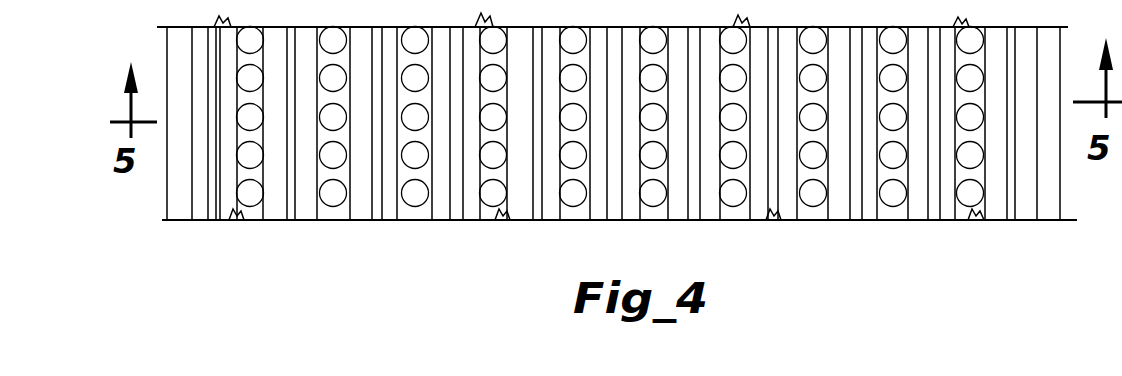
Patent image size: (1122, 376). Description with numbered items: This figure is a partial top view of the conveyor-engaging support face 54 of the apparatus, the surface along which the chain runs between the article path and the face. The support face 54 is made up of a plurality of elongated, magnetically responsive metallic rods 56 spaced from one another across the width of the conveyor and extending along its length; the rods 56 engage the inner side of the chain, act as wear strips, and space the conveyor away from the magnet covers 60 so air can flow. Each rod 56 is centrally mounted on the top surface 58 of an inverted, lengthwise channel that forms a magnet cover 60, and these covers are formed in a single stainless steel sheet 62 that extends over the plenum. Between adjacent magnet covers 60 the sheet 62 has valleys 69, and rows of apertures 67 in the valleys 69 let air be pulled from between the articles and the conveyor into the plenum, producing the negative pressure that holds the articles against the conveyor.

The support face 54 is at (845, 202).
The rods 56 is at (378, 192).
The top surface 58 is at (468, 198).
The magnet covers 60 is at (440, 198).
The sheet 62 is at (1027, 207).
The apertures 67 is at (332, 203).
The valleys 69 is at (328, 172).